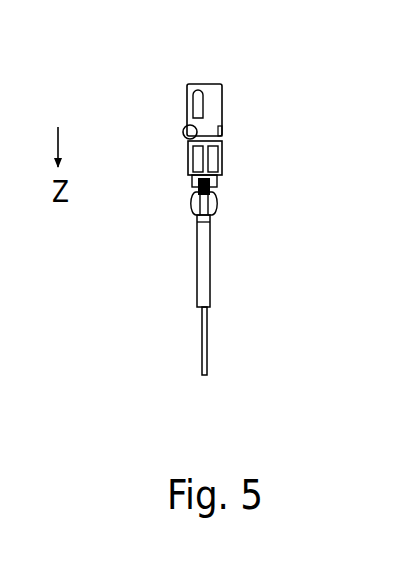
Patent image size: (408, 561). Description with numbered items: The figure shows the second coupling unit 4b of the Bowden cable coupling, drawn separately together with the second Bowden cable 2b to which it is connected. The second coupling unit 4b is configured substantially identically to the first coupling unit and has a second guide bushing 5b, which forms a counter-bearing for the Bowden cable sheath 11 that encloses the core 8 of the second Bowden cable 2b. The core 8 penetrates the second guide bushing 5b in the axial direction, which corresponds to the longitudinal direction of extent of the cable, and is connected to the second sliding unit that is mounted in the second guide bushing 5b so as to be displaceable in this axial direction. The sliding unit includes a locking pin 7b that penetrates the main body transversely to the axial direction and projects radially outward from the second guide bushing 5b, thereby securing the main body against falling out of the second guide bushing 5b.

The second Bowden cable 2b is at (183, 328).
The second coupling unit 4b is at (240, 103).
The second guide bushing 5b is at (195, 163).
The locking pin 7b is at (193, 131).
The Bowden cable sheath 11 is at (200, 287).
The core 8 is at (203, 357).